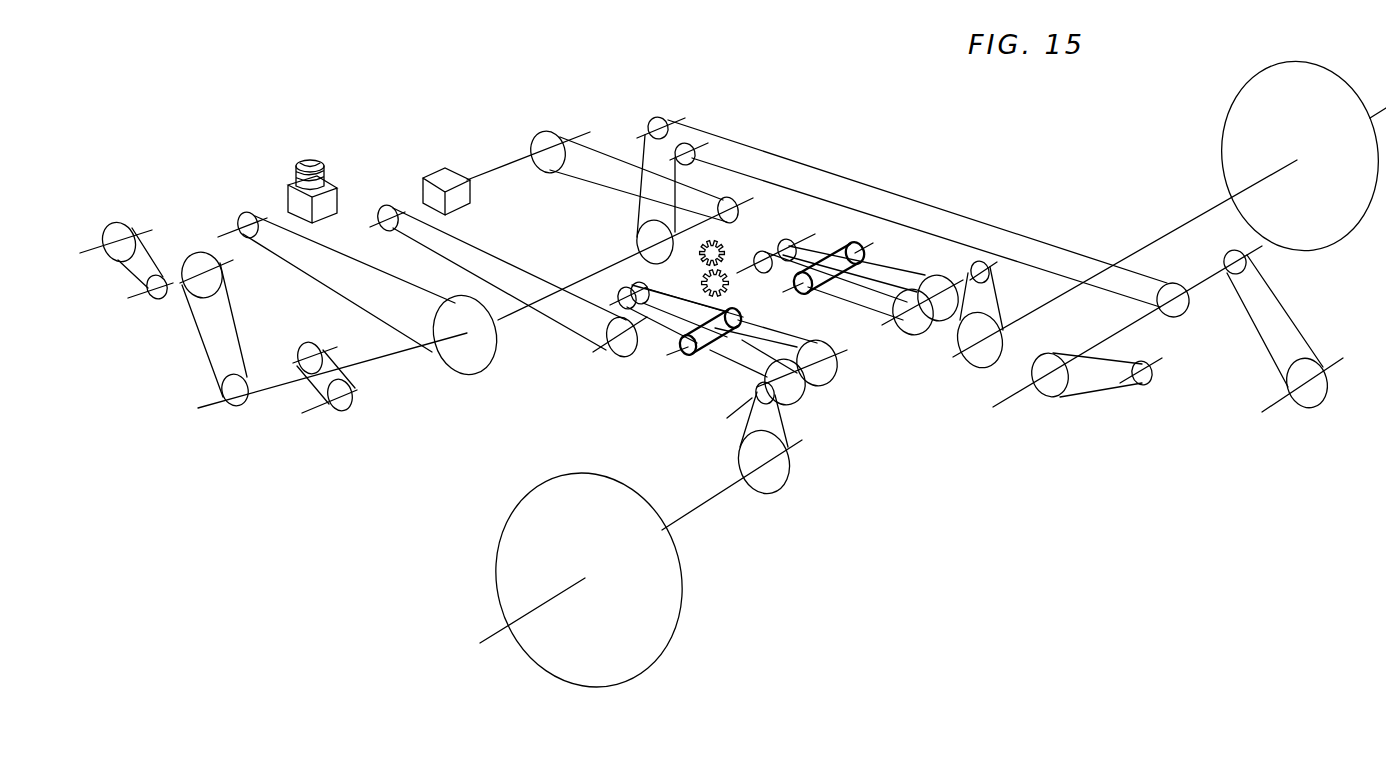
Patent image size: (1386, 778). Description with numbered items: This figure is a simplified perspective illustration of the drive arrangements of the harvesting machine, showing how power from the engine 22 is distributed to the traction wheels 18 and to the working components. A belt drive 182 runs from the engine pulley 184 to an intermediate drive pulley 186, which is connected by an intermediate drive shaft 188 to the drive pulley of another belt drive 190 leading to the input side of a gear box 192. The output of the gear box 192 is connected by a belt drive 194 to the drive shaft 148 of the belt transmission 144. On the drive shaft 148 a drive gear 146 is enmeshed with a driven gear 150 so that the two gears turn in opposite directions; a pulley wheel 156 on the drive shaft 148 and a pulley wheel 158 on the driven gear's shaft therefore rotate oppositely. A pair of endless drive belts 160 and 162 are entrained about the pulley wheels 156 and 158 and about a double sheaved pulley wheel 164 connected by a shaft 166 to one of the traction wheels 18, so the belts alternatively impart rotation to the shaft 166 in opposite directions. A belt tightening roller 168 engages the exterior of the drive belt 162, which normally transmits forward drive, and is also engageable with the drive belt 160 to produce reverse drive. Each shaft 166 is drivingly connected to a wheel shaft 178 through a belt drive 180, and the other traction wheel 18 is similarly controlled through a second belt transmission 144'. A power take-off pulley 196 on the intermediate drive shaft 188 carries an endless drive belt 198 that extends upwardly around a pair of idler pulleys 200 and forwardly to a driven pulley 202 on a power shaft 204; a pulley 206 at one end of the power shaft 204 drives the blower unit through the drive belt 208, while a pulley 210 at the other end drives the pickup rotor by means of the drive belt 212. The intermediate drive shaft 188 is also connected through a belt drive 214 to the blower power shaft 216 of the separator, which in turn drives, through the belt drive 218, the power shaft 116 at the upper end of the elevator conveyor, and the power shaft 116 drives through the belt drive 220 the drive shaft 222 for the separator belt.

The traction wheel 18 is at (663, 617).
The engine 22 is at (327, 202).
The power shaft 116 is at (140, 295).
The belt transmission 144 is at (739, 369).
The second belt transmission 144' is at (848, 225).
The drive gear 146 is at (725, 300).
The drive shaft 148 is at (597, 352).
The driven gear 150 is at (740, 230).
The pulley wheel 156 is at (613, 297).
The pulley wheel 158 is at (637, 283).
The drive belt 160 is at (793, 340).
The drive belt 162 is at (747, 320).
The double sheaved pulley wheel 164 is at (838, 360).
The shaft 166 is at (740, 407).
The belt tightening roller 168 is at (686, 353).
The wheel shaft 178 is at (730, 493).
The belt drive 180 is at (782, 427).
The belt drive 182 is at (358, 245).
The engine pulley 184 is at (247, 214).
The intermediate drive pulley 186 is at (457, 357).
The intermediate drive shaft 188 is at (522, 313).
The belt drive 190 is at (601, 146).
The gear box 192 is at (459, 167).
The belt drive 194 is at (503, 256).
The power take-off pulley 196 is at (637, 237).
The endless drive belt 198 is at (752, 145).
The idler pulleys 200 is at (660, 124).
The driven pulley 202 is at (1173, 290).
The power shaft 204 is at (1097, 347).
The pulley 206 is at (1053, 383).
The drive belt 208 is at (1087, 393).
The pulley 210 is at (1230, 257).
The drive belt 212 is at (1297, 327).
The belt drive 214 is at (339, 364).
The blower power shaft 216 is at (273, 378).
The belt drive 218 is at (238, 328).
The belt drive 220 is at (151, 245).
The drive shaft 222 is at (94, 246).